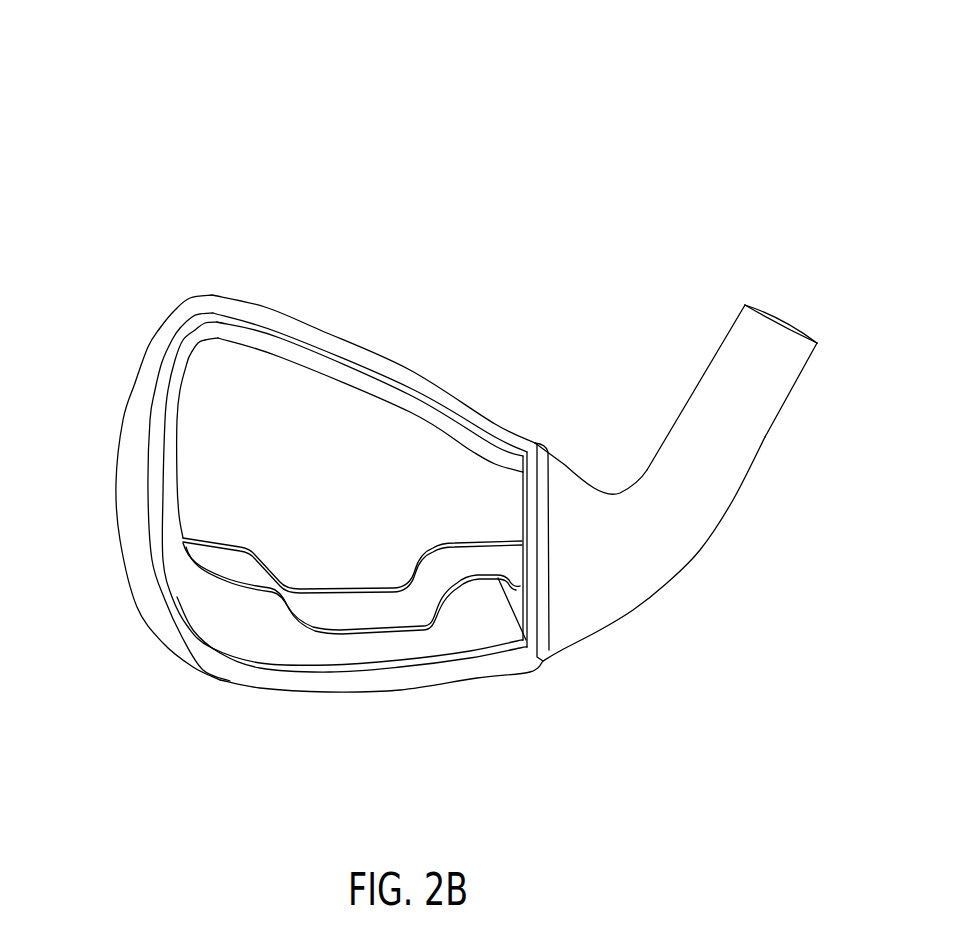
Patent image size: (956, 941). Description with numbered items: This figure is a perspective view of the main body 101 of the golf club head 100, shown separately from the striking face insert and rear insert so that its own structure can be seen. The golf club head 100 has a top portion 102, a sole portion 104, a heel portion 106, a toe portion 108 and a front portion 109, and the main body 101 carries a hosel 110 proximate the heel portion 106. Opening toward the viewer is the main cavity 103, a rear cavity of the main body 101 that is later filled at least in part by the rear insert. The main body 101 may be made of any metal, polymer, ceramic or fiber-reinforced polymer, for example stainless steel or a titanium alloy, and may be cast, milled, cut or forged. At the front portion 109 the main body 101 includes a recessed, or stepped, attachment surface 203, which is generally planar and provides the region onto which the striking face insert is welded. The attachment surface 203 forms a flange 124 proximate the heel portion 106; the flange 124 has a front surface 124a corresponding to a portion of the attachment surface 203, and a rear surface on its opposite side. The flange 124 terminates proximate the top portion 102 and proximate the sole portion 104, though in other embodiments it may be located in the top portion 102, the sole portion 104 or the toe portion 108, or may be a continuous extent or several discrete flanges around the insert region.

The golf club head 100 is at (146, 82).
The main body 101 is at (260, 243).
The top portion 102 is at (366, 323).
The main cavity 103 is at (222, 424).
The sole portion 104 is at (322, 705).
The heel portion 106 is at (668, 612).
The toe portion 108 is at (97, 535).
The front portion 109 is at (520, 690).
The hosel 110 is at (713, 357).
The flange 124 is at (523, 498).
The front surface 124a is at (538, 502).
The attachment surface 203 is at (242, 675).